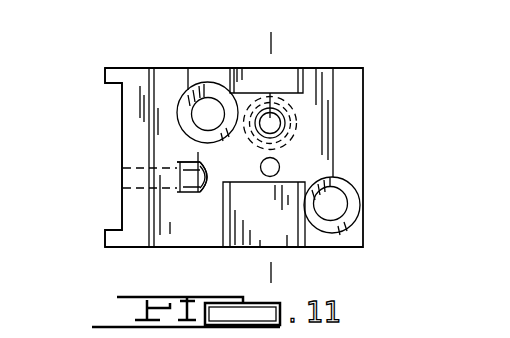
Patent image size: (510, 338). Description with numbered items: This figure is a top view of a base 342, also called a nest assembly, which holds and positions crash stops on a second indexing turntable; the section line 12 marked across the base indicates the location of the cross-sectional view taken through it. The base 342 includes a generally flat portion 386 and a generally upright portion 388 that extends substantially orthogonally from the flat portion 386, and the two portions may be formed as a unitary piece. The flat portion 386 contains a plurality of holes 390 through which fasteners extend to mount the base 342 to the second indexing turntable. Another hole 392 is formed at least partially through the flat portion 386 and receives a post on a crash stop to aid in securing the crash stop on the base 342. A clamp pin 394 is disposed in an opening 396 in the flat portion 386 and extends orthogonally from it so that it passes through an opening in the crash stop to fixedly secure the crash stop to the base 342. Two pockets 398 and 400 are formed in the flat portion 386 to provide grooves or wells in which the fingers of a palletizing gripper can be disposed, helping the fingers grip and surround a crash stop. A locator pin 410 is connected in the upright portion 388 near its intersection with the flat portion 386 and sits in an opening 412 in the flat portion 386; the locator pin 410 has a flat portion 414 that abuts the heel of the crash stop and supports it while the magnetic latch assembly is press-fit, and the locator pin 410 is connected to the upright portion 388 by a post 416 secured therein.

The section line 12- 12 is at (250, 273).
The base 342 is at (366, 62).
The generally flat portion 386 is at (355, 136).
The generally upright portion 388 is at (147, 77).
The holes 390 is at (210, 105).
The hole 392 is at (279, 167).
The clamp pin 394 is at (272, 88).
The opening 396 is at (293, 123).
The pocket 398 is at (290, 68).
The pocket 400 is at (287, 247).
The locator pin 410 is at (198, 160).
The opening 412 is at (213, 190).
The flat portion 414 is at (185, 194).
The post 416 is at (127, 178).